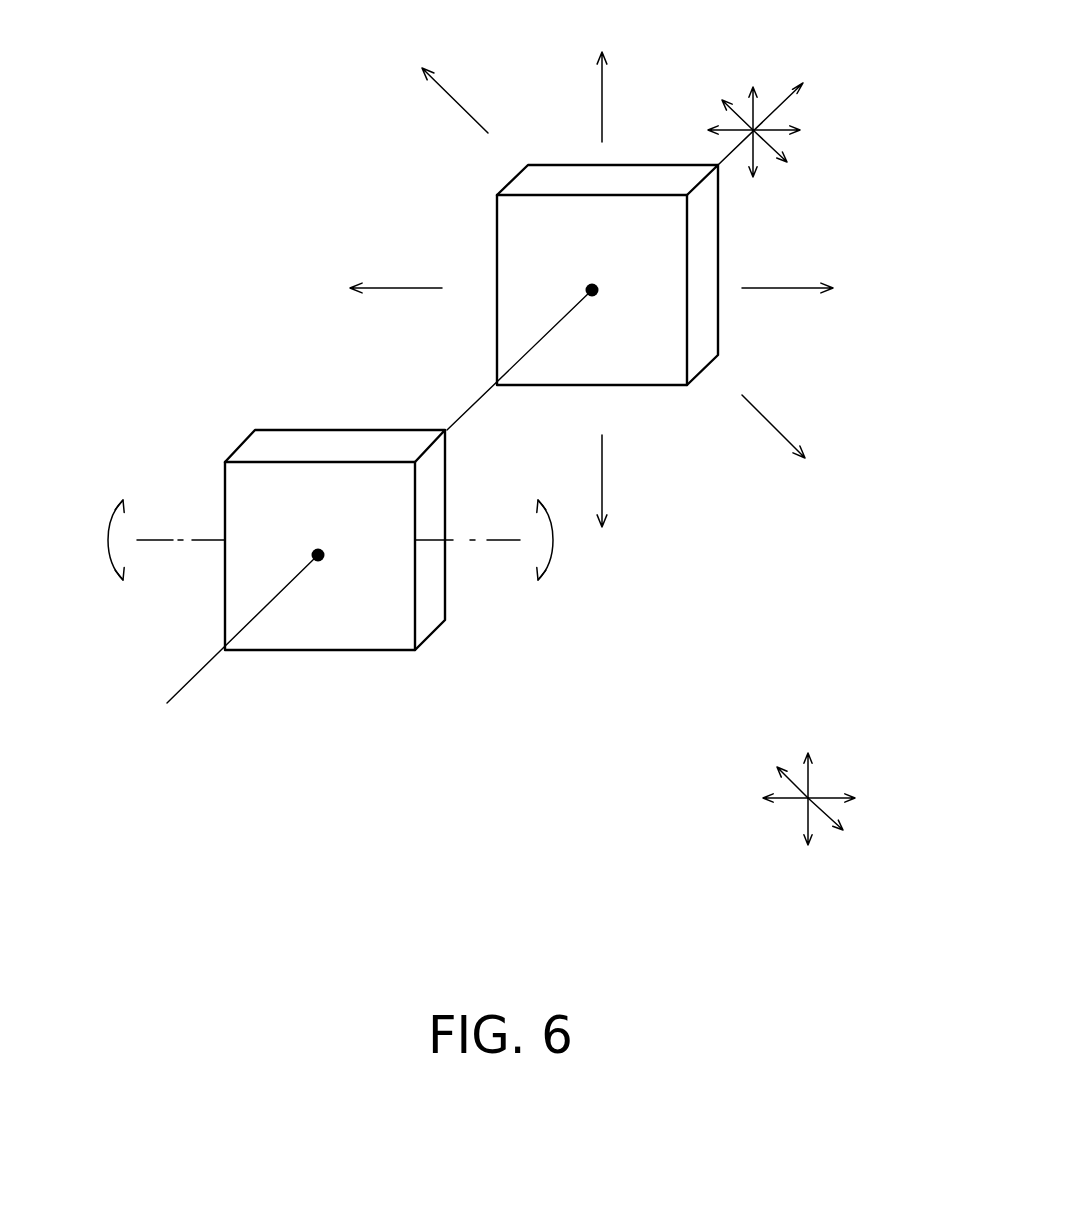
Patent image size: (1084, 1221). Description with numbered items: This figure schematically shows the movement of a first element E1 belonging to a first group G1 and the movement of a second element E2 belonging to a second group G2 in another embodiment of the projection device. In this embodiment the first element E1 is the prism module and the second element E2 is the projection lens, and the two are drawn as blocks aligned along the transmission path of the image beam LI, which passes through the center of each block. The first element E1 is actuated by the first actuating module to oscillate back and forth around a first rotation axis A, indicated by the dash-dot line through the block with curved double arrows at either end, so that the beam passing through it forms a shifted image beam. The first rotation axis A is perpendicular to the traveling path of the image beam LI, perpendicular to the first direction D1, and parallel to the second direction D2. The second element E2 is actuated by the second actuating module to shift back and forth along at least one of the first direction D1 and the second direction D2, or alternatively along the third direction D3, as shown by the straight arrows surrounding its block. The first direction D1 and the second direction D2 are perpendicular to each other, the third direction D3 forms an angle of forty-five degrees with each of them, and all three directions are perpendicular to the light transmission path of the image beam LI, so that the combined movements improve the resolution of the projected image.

The first element E1 is at (270, 430).
The first group G1 is at (335, 499).
The second element E2 is at (543, 165).
The second group G2 is at (591, 289).
The first rotation axis A is at (200, 540).
The image beam LI is at (222, 653).
The first direction D1 is at (808, 841).
The second direction D2 is at (828, 800).
The third direction D3 is at (796, 779).